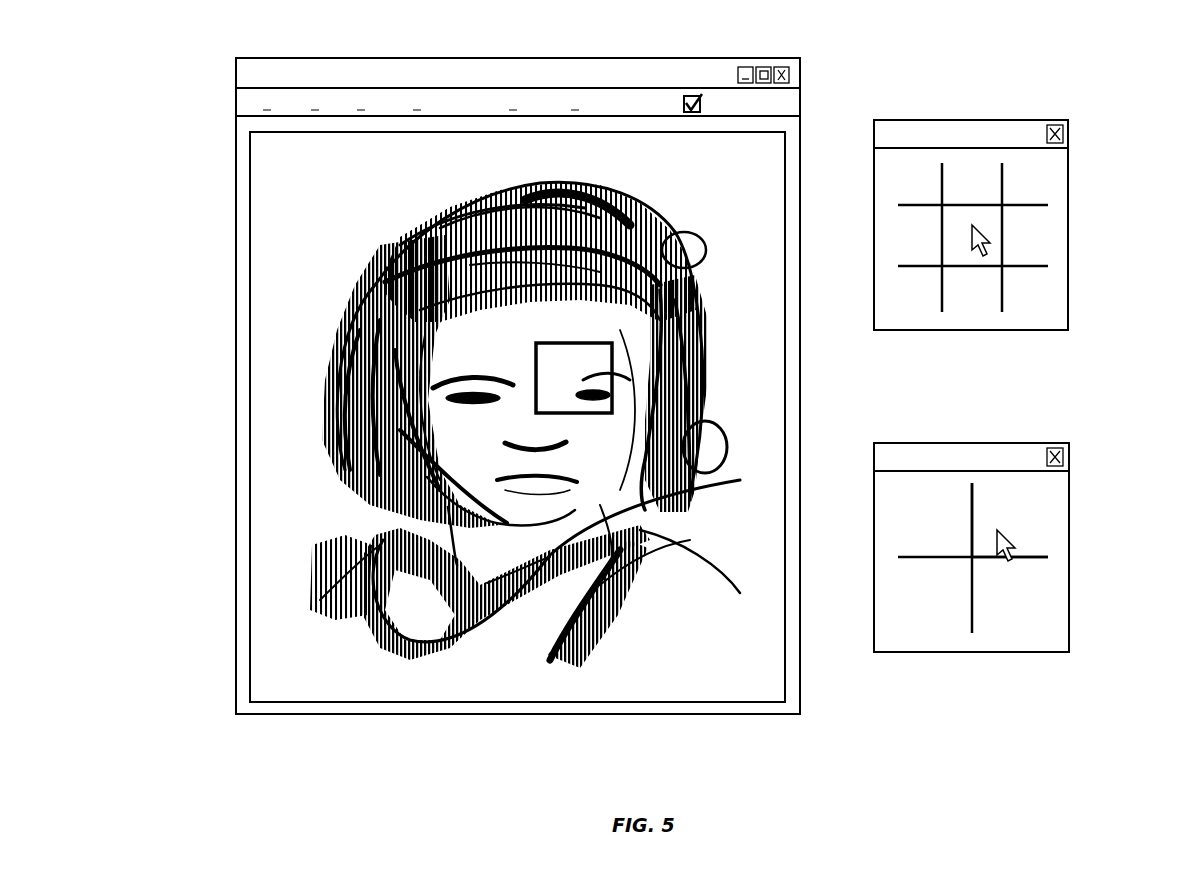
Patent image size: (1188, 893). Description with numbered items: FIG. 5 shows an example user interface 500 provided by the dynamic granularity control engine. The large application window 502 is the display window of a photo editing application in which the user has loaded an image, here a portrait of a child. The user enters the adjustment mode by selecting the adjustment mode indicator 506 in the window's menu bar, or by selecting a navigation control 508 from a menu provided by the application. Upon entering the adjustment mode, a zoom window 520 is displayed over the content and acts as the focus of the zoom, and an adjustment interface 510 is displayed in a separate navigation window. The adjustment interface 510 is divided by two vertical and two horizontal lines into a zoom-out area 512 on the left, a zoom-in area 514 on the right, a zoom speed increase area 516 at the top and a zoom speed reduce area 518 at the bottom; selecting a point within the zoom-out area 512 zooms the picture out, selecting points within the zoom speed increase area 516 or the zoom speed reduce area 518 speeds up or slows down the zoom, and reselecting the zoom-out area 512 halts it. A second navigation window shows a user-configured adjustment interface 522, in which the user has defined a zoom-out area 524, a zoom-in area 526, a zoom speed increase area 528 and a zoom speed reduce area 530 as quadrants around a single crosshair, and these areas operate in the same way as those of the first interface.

The user interface 500 is at (890, 716).
The application window 502 is at (621, 102).
The adjustment mode indicator 506 is at (696, 90).
The navigation control 508 is at (1014, 117).
The adjustment interface 510 is at (973, 222).
The zoom-out area 512 is at (918, 236).
The zoom-in area 514 is at (1020, 236).
The zoom speed increase area 516 is at (965, 185).
The zoom speed reduce area 518 is at (966, 300).
The zoom window 520 is at (532, 375).
The adjustment interface 522 is at (989, 500).
The zoom-out area 524 is at (929, 514).
The zoom-in area 526 is at (1030, 520).
The zoom speed increase area 528 is at (1011, 597).
The zoom speed reduce area 530 is at (928, 597).